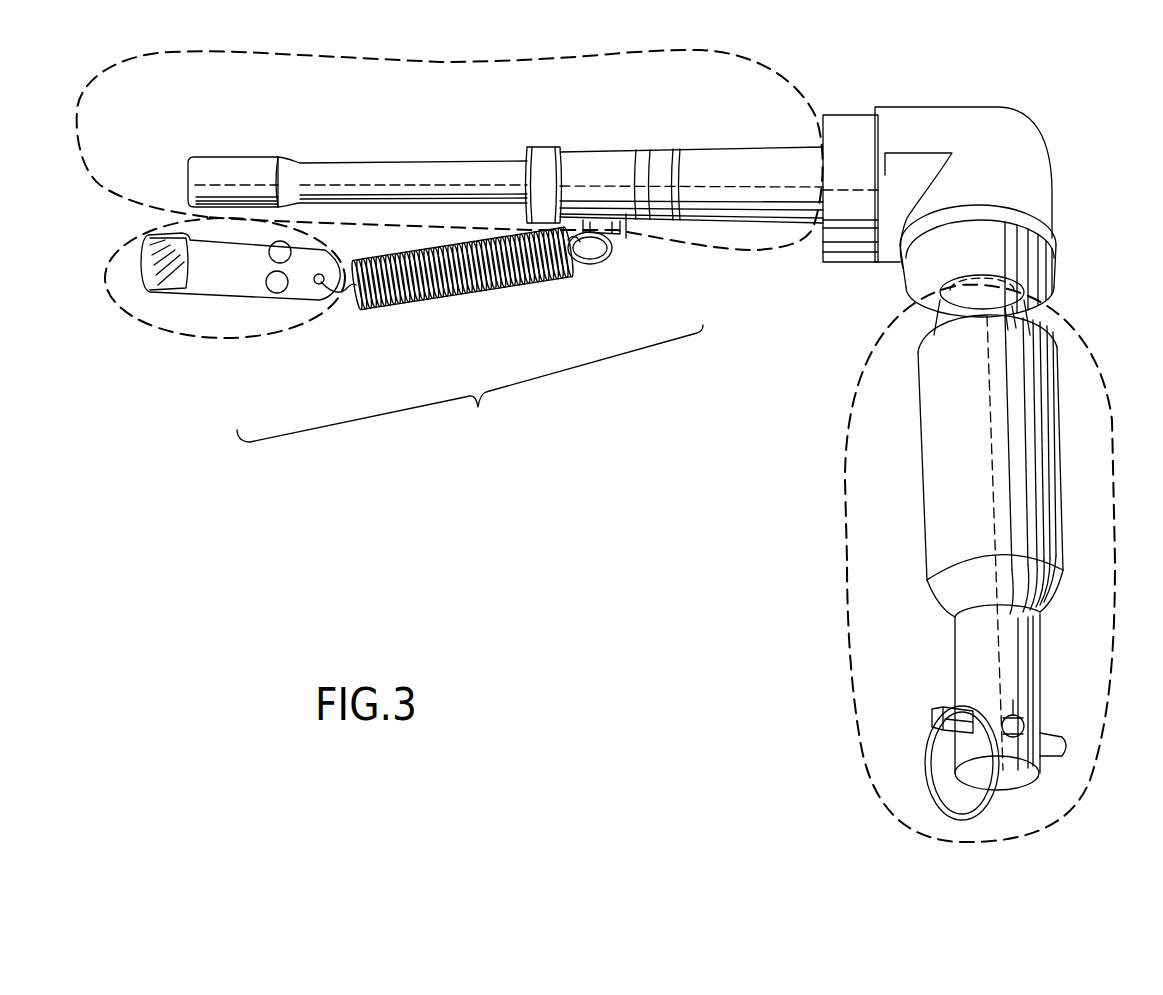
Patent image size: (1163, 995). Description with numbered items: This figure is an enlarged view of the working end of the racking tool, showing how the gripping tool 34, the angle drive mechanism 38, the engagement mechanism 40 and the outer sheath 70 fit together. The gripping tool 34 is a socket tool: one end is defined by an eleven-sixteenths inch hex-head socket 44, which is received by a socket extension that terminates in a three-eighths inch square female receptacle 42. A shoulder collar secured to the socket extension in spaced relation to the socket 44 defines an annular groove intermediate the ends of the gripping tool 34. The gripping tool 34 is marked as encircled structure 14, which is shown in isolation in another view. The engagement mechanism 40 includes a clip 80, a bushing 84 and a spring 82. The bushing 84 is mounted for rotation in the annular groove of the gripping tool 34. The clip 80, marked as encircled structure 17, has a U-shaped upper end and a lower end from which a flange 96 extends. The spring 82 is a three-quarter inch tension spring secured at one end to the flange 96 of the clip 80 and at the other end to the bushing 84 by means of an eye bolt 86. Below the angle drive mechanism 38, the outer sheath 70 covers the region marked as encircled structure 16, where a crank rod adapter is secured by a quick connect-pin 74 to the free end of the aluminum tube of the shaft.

The encircled structure 14 is at (443, 62).
The encircled structure 16 is at (845, 537).
The encircled structure 17 is at (177, 330).
The gripping tool 34 is at (400, 162).
The angle drive mechanism 38 is at (1010, 132).
The engagement mechanism 40 is at (401, 336).
The square female receptacle 42 is at (175, 179).
The hex-head socket 44 is at (733, 148).
The outer sheath 70 is at (932, 452).
The quick connect-pin 74 is at (934, 790).
The clip 80 is at (233, 283).
The spring 82 is at (450, 300).
The bushing 84 is at (628, 218).
The eye bolt 86 is at (619, 232).
The flange 96 is at (305, 290).